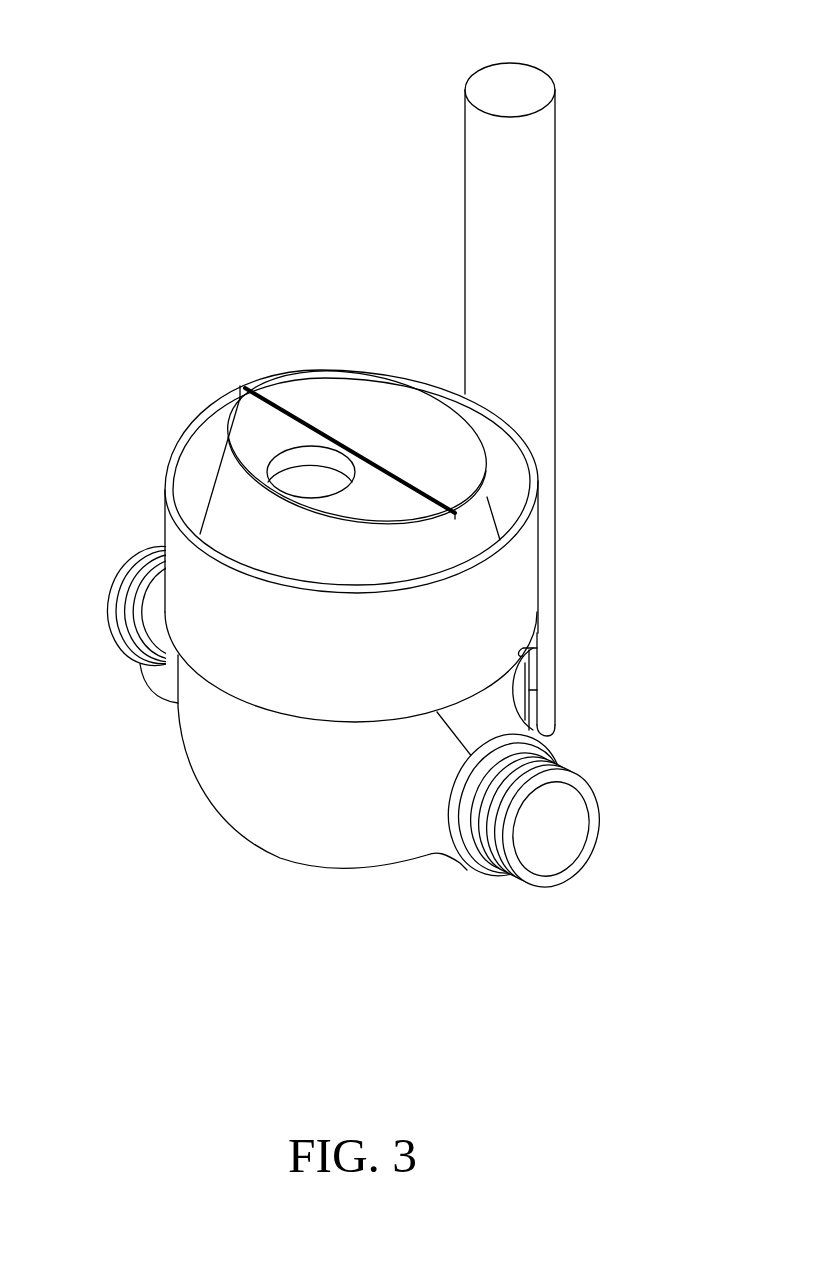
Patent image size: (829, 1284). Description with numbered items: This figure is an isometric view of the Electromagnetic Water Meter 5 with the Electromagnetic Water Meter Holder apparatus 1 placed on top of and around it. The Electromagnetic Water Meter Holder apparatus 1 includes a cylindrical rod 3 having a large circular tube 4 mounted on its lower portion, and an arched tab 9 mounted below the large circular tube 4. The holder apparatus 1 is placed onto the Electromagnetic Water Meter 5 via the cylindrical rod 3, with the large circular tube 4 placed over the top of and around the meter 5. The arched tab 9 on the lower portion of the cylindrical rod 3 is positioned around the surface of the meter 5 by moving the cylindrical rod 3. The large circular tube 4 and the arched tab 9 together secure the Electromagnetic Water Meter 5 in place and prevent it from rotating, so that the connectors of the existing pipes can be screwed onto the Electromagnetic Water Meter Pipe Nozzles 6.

The Electromagnetic Water Meter Holder apparatus 1 is at (405, 128).
The cylindrical rod 3 is at (556, 247).
The large circular tube 4 is at (468, 620).
The Electromagnetic Water Meter 5 is at (250, 800).
The Electromagnetic Water Meter Pipe Nozzles 6 is at (123, 637).
The arched tab 9 is at (535, 702).